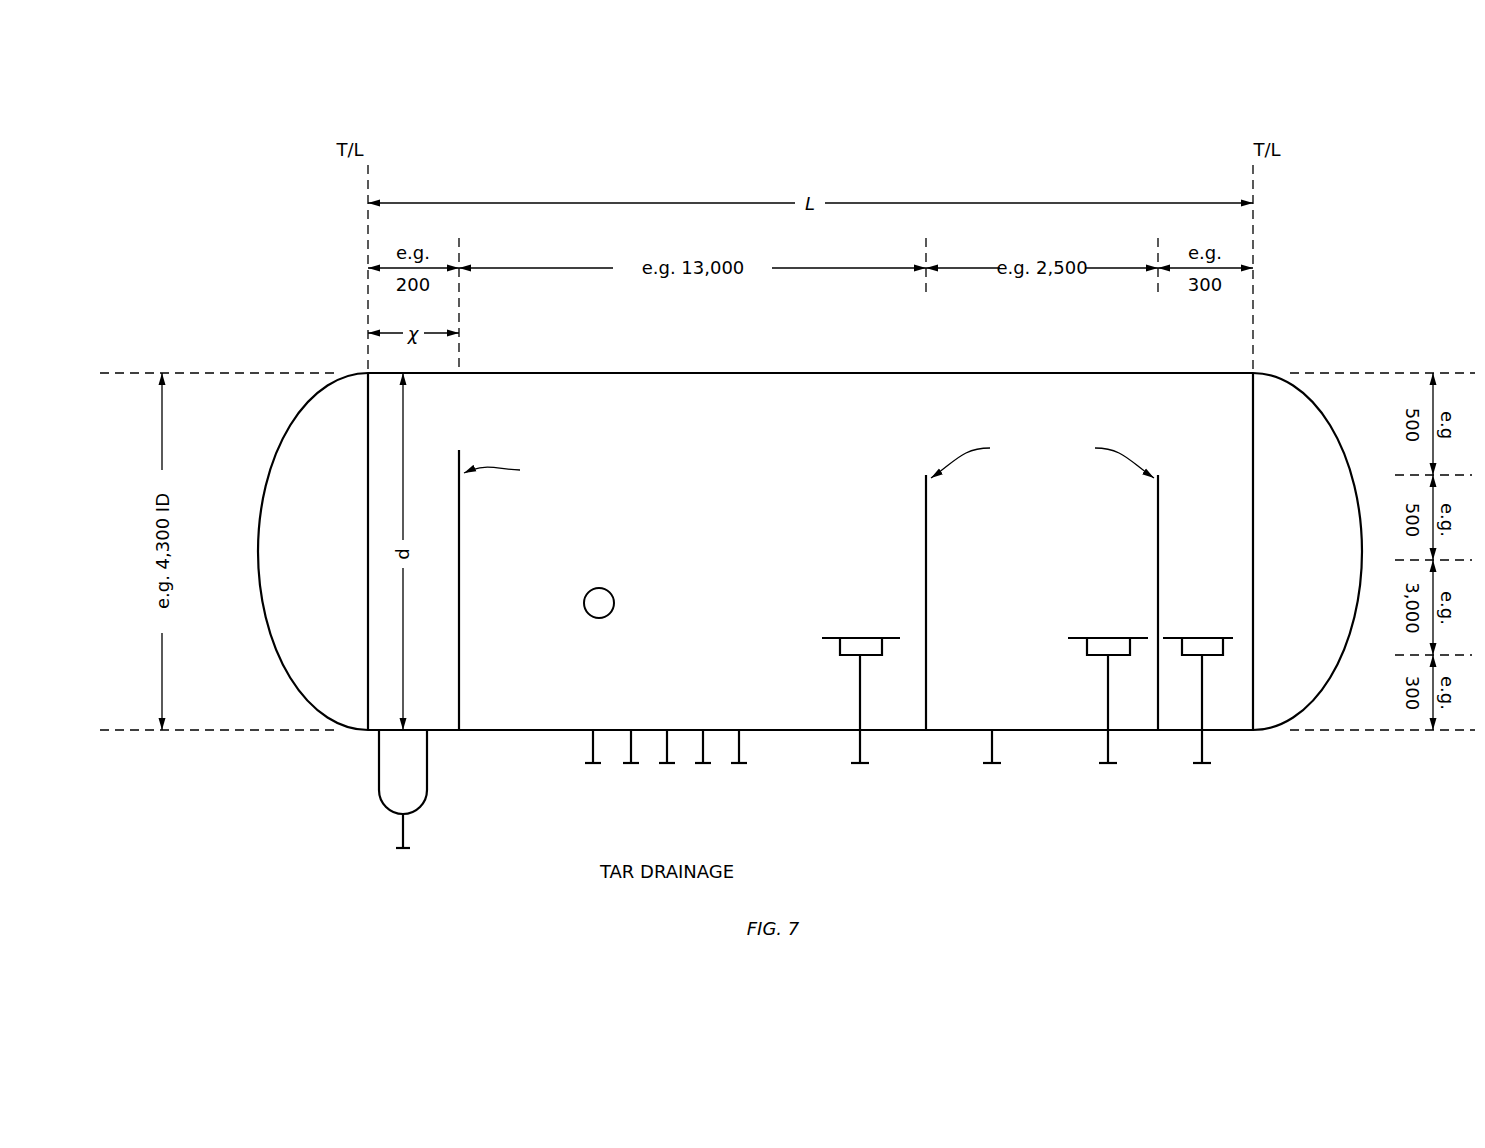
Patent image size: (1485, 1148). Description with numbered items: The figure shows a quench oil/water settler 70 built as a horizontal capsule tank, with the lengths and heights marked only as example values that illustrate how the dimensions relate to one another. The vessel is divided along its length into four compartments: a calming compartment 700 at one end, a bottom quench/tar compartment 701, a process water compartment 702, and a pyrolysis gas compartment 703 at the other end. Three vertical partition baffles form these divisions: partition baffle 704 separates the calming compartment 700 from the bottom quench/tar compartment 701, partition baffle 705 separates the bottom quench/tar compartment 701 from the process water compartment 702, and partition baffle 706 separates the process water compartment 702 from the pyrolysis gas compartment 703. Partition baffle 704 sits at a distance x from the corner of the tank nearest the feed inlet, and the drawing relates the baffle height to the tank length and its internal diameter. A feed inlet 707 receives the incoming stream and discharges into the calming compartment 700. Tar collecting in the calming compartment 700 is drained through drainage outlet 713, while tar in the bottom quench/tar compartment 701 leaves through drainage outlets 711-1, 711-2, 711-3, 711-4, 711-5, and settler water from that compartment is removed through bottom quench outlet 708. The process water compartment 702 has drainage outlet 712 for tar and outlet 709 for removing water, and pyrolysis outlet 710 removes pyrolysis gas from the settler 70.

The quench oil/water settler 70 is at (332, 73).
The calming compartment 700 is at (307, 487).
The bottom quench/tar compartment 701 is at (760, 503).
The process water compartment 702 is at (1037, 616).
The pyrolysis gas compartment 703 is at (1285, 496).
The partition baffle 704 is at (461, 554).
The partition baffle 705 is at (928, 525).
The partition baffle 706 is at (1160, 484).
The feed inlet 707 is at (613, 599).
The bottom quench outlet 708 is at (862, 821).
The outlet 709 is at (1113, 821).
The pyrolysis outlet 710 is at (1202, 796).
The drainage outlet 711-1 is at (593, 768).
The drainage outlet 711-2 is at (631, 768).
The drainage outlet 711-3 is at (667, 768).
The drainage outlet 711-4 is at (703, 768).
The drainage outlet 711-5 is at (739, 768).
The drainage outlet 712 is at (992, 821).
The drainage outlet 713 is at (401, 826).